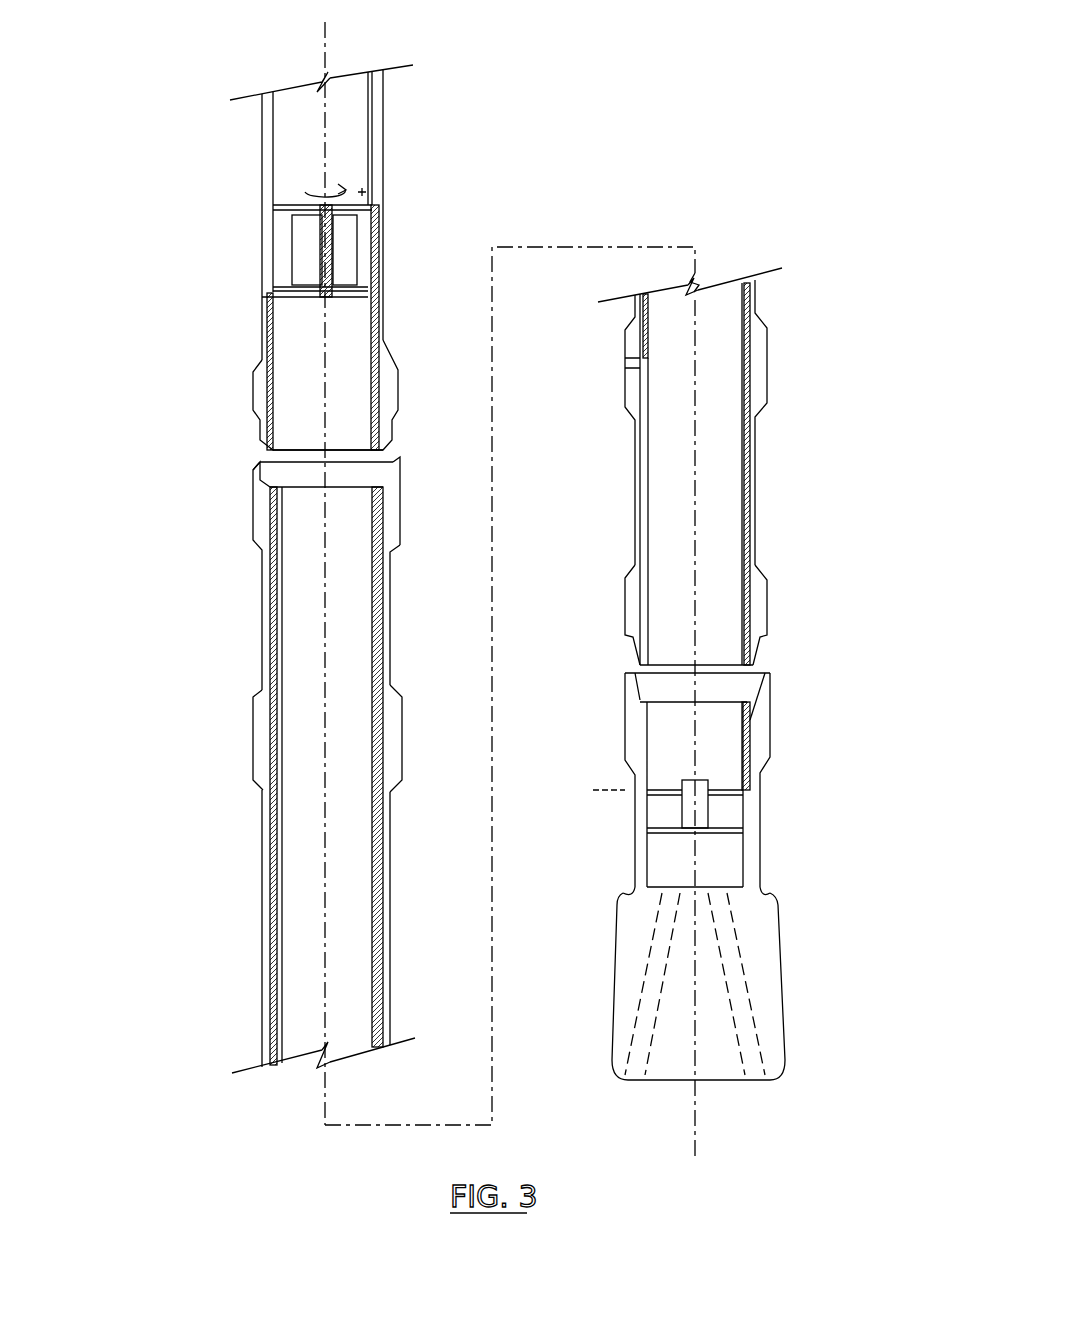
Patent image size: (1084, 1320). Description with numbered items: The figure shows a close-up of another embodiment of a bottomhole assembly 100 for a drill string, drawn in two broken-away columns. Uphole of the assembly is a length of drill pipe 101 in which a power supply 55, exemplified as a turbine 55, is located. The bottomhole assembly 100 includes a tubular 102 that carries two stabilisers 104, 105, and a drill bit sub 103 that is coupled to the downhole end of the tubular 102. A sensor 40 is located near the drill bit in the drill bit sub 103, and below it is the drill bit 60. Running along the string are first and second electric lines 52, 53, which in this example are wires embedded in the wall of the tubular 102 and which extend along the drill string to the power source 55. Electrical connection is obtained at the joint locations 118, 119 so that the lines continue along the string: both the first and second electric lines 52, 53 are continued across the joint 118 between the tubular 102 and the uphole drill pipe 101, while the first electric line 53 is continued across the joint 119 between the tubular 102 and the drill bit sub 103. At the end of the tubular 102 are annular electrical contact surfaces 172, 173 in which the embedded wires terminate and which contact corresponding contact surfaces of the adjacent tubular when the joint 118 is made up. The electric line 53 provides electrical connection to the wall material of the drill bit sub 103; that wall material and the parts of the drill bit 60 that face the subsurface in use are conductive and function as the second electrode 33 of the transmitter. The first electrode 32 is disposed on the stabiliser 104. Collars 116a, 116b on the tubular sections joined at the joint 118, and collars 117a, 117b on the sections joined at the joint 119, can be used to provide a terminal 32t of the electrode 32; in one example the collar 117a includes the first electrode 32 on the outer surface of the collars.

The bottomhole assembly 100 is at (185, 512).
The drill pipe 101 is at (262, 178).
The power supply 55 is at (357, 233).
The second electric line 52 is at (260, 372).
The first electric line 53 is at (380, 372).
The collar 116a is at (257, 397).
The joint location 118 is at (405, 440).
The annular electrical contact surface 172 is at (262, 465).
The annular electrical contact surface 173 is at (383, 487).
The collar 116b is at (400, 507).
The tubular 102 is at (262, 610).
The stabiliser 105 is at (262, 785).
The stabiliser 104 is at (767, 405).
The terminal 32t is at (633, 358).
The electrode 32 is at (625, 368).
The collar 117a is at (625, 617).
The joint location 119 is at (770, 660).
The collar 117b is at (625, 692).
The drill bit sub 103 is at (760, 775).
The sensor 40 is at (700, 815).
The drill bit 60 is at (780, 943).
The second electrode 33 is at (695, 984).